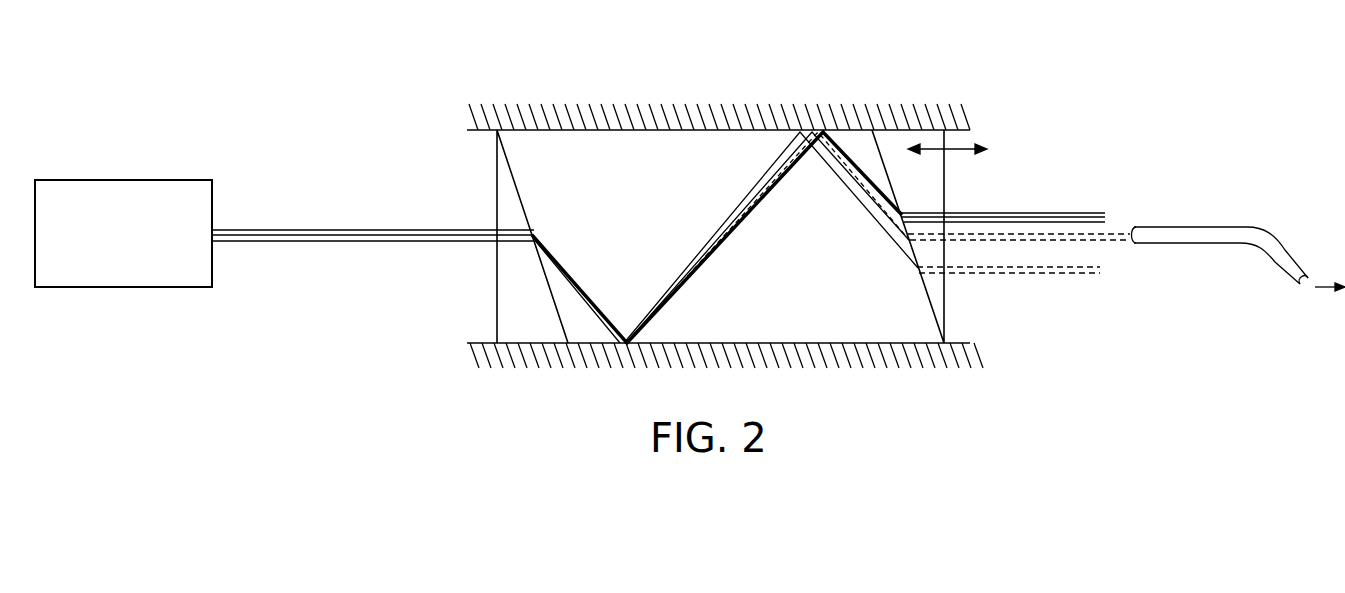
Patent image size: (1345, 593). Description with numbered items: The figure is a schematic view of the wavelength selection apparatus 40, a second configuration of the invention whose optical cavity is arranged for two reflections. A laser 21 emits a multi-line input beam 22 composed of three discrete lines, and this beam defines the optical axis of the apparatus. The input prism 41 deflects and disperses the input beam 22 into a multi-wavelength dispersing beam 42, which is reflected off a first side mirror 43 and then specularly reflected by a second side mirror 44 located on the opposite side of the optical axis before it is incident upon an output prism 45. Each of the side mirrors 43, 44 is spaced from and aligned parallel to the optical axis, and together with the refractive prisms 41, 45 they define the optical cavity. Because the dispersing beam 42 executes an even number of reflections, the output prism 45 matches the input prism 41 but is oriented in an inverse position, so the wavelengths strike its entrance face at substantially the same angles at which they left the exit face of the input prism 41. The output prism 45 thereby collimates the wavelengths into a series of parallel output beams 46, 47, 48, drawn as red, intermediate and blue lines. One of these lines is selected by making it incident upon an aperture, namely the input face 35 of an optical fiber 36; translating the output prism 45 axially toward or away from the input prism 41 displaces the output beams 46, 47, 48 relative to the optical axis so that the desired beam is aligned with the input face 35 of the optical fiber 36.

The laser 21 is at (132, 180).
The input beam 22 is at (350, 240).
The input face of optical fiber 35 is at (1132, 236).
The optical fiber 36 is at (1287, 246).
The wavelength selection apparatus 40 is at (955, 82).
The input prism 41 is at (497, 315).
The dispersing beam 42 is at (570, 276).
The first side mirror 43 is at (735, 344).
The second side mirror 44 is at (642, 132).
The output prism 45 is at (955, 170).
The output beam 46 is at (1063, 277).
The output beam 47 is at (1112, 232).
The output beam 48 is at (1055, 212).